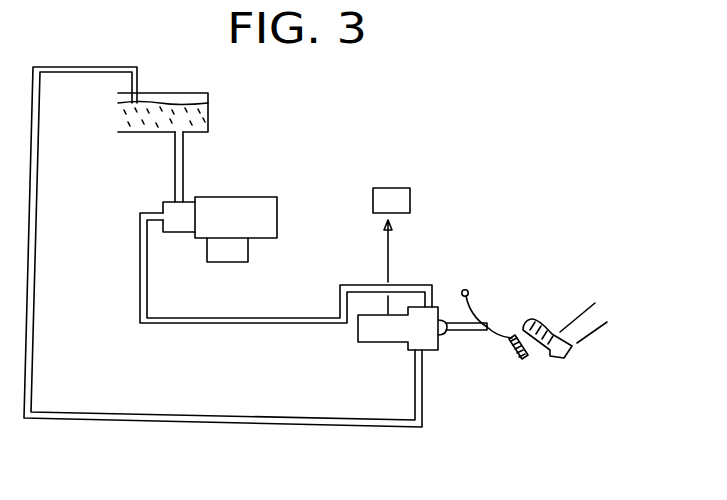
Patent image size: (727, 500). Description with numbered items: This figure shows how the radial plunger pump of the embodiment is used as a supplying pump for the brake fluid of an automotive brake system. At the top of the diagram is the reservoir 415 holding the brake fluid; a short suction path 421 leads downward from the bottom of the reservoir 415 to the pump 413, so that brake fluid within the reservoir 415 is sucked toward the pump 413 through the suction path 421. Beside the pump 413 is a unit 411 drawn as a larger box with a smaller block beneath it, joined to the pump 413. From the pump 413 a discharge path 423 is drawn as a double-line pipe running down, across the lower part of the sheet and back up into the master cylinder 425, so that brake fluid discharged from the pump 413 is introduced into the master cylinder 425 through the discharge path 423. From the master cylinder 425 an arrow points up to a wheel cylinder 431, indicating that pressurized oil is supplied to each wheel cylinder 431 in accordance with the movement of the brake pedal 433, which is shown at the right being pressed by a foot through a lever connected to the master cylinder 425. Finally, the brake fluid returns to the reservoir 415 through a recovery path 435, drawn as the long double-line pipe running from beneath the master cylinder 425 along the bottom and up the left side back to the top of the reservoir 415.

The pump unit 411 is at (265, 210).
The pump 413 is at (163, 208).
The reservoir 415 is at (122, 122).
The suction path 421 is at (175, 168).
The discharge path 423 is at (140, 290).
The master cylinder 425 is at (435, 355).
The wheel cylinder 431 is at (408, 195).
The brake pedal 433 is at (516, 362).
The recovery path 435 is at (175, 427).